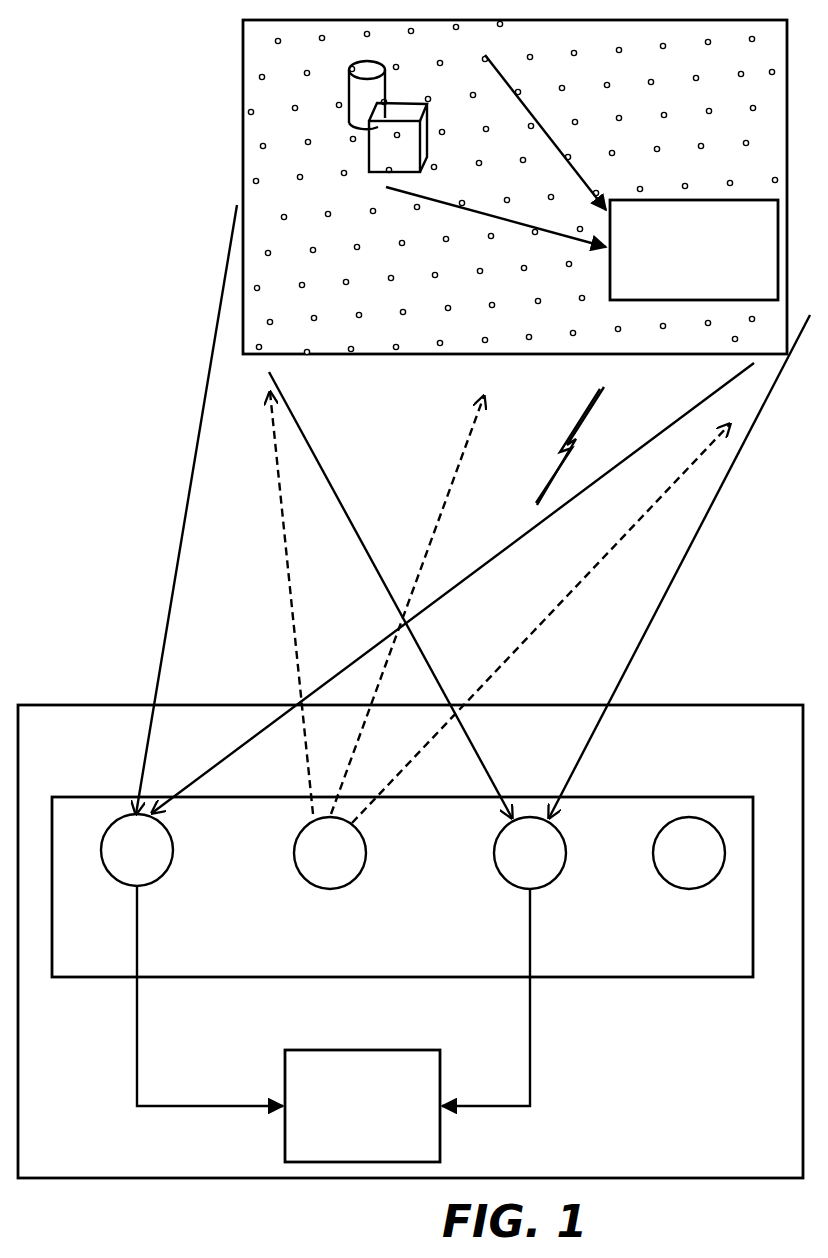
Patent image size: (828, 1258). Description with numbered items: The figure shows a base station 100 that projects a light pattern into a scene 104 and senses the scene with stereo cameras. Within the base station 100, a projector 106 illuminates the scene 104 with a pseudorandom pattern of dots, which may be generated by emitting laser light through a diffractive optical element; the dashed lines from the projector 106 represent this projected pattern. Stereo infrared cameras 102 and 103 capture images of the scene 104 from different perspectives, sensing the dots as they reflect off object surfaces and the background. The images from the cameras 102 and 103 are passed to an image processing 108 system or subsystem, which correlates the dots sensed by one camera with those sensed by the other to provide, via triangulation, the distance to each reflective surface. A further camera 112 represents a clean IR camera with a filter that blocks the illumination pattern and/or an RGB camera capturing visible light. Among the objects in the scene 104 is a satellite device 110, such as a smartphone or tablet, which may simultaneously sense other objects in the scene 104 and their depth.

The base station 100 is at (410, 941).
The camera 102 is at (427, 655).
The camera 103 is at (539, 710).
The scene 104 is at (515, 187).
The projector 106 is at (500, 640).
The image processing 108 is at (362, 1106).
The satellite device 110 is at (694, 250).
The camera 112 is at (689, 853).